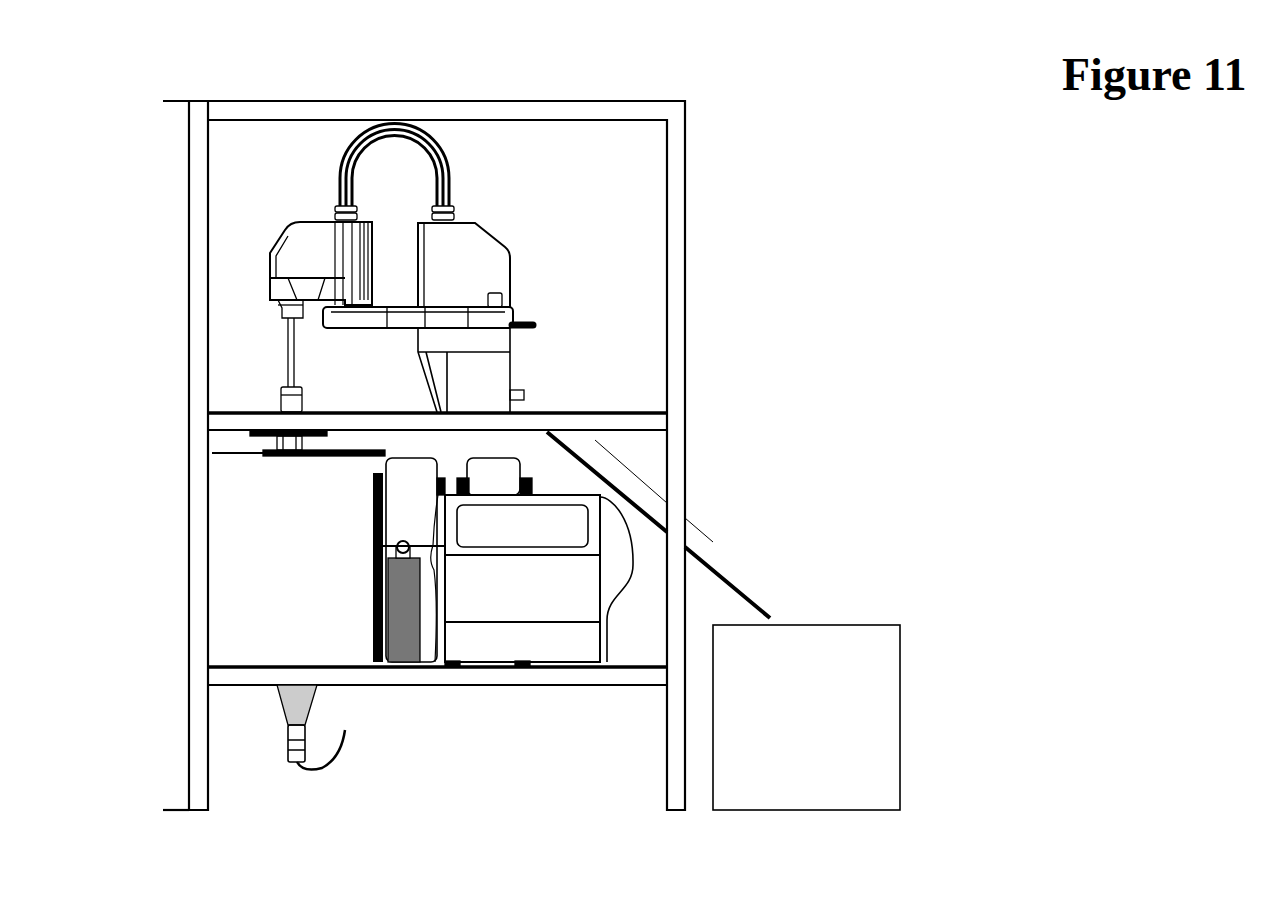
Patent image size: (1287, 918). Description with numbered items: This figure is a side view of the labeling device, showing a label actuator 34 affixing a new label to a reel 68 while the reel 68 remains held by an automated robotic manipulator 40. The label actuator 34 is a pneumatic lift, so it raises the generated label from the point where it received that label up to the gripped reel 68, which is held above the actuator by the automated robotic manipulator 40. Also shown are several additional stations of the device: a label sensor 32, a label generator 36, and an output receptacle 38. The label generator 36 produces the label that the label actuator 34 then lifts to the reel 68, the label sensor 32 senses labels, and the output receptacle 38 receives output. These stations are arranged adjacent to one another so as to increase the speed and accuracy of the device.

The automated robotic manipulator 40 is at (267, 272).
The reel 68 is at (250, 433).
The label actuator 34 is at (262, 453).
The label generator 36 is at (550, 670).
The output receptacle 38 is at (900, 687).
The label sensor 32 is at (290, 760).